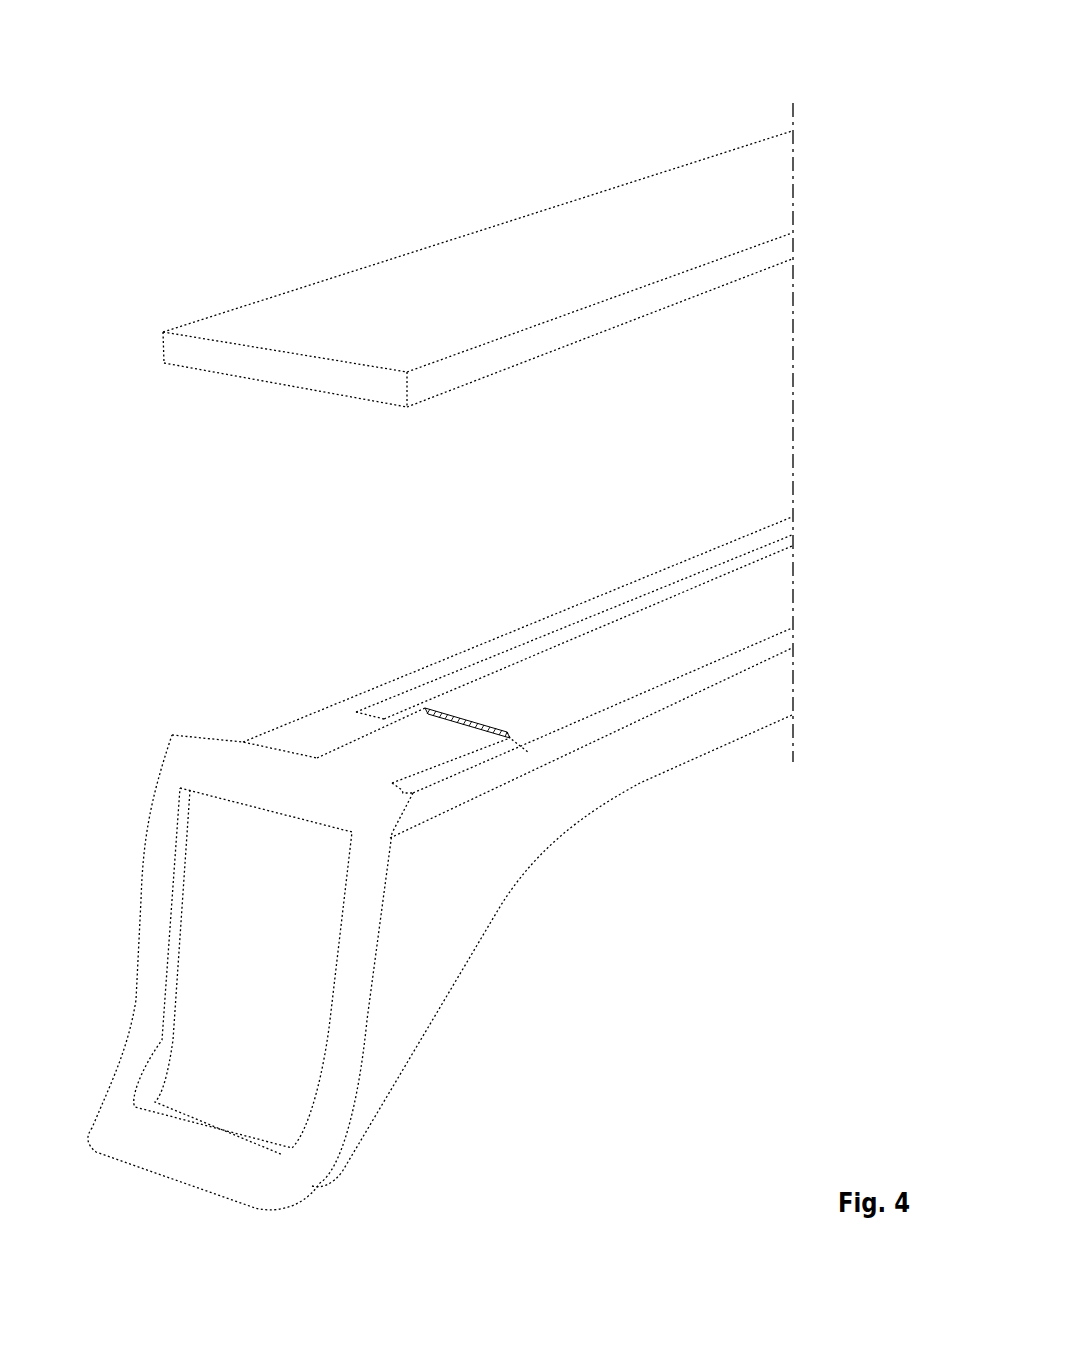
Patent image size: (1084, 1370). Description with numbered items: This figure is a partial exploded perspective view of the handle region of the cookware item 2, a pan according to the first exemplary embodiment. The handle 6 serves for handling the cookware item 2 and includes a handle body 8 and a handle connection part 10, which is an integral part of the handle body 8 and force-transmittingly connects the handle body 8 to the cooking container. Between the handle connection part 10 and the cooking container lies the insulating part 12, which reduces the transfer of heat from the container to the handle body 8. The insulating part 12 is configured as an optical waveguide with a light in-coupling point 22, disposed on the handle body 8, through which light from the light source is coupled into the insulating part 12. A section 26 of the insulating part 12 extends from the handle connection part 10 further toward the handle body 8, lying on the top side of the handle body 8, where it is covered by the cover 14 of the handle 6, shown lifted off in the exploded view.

The cookware item 2 is at (804, 90).
The handle 6 is at (820, 168).
The handle body 8 is at (768, 538).
The handle connection part 10 is at (417, 943).
The insulating part 12 is at (345, 995).
The cover 14 is at (729, 271).
The light in-coupling point 22 is at (444, 739).
The section of insulating part 26 is at (408, 747).